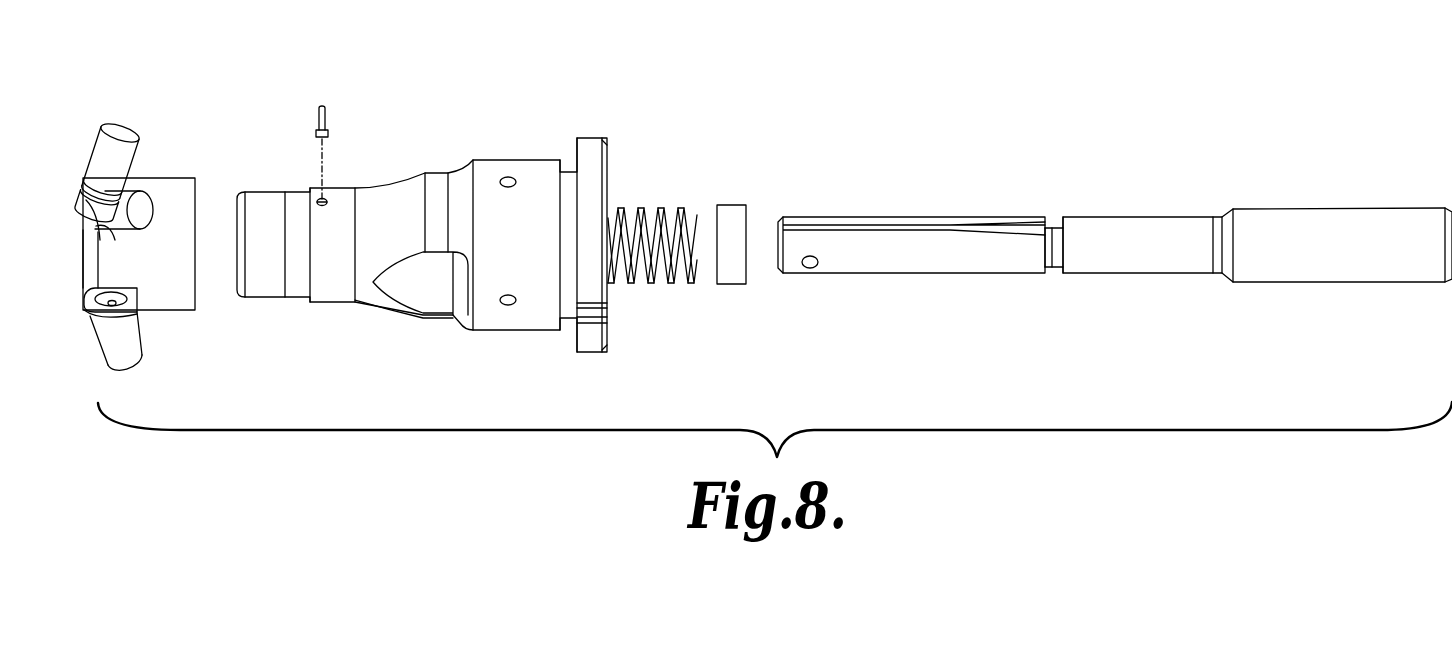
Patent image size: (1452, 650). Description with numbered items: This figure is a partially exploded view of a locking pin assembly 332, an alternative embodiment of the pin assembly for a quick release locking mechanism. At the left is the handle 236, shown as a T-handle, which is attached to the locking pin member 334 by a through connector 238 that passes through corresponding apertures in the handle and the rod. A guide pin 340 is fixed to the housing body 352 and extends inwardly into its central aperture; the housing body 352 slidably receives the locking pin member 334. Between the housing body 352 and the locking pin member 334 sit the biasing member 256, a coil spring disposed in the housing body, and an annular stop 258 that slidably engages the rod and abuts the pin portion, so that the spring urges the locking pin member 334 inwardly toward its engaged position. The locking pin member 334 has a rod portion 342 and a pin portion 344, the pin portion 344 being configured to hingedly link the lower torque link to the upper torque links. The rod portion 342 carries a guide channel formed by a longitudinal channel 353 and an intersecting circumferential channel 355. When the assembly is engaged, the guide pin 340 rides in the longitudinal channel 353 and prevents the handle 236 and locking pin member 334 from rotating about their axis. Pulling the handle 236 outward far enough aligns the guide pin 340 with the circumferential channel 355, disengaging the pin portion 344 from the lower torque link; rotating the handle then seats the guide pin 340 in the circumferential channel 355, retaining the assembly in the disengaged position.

The handle 236 is at (165, 153).
The through connector 238 is at (115, 304).
The guide pin 340 is at (327, 121).
The housing body 352 is at (557, 128).
The biasing member 256 is at (645, 212).
The annular stop 258 is at (733, 208).
The locking pin assembly 332 is at (945, 82).
The locking pin member 334 is at (1177, 290).
The longitudinal channel 353 is at (1005, 228).
The circumferential channel 355 is at (1053, 226).
The rod portion 342 is at (1153, 220).
The pin portion 344 is at (1335, 211).